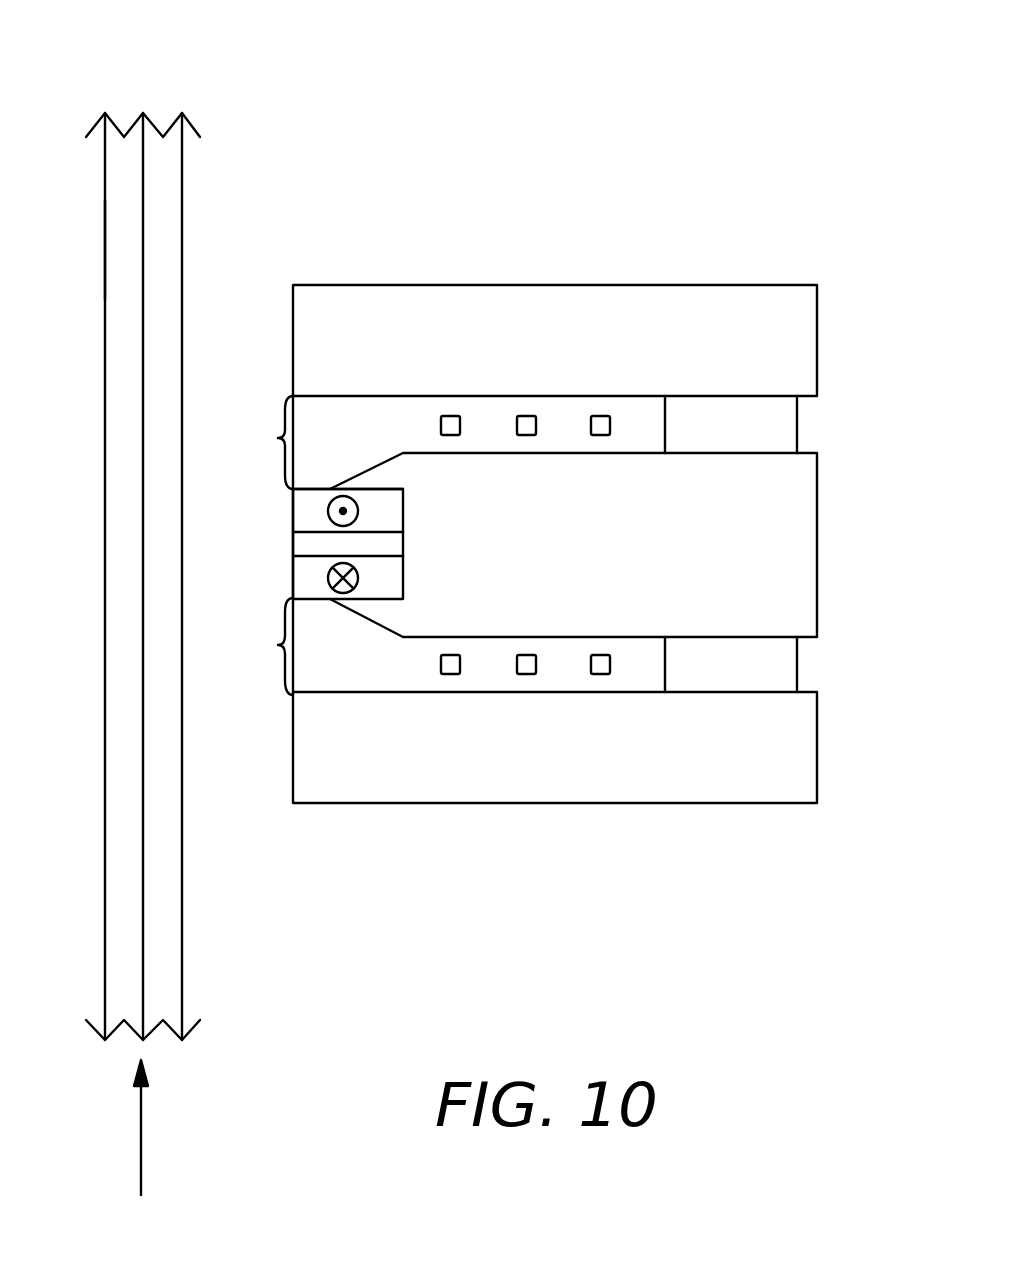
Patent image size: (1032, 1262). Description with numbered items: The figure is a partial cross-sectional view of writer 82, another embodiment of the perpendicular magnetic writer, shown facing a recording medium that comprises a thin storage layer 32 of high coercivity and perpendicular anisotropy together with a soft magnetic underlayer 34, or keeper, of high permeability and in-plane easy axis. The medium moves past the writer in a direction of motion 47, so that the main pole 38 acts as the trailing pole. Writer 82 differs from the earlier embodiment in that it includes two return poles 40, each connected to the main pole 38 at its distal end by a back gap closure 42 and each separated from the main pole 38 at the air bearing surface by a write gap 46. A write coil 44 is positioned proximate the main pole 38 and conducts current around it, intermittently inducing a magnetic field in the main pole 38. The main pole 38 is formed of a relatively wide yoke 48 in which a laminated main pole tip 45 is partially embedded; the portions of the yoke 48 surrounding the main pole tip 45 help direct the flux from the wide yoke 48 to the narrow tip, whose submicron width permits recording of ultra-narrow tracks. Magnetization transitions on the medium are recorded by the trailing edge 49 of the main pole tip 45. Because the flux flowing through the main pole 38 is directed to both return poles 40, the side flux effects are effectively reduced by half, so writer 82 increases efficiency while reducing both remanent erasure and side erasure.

The writer 82 is at (672, 138).
The thin storage layer 32 is at (175, 238).
The soft magnetic underlayer 34 is at (120, 210).
The direction of motion 47 is at (143, 1143).
The return pole 40 is at (795, 337).
The back gap closure 42 is at (777, 415).
The write coil 44 is at (600, 416).
The write gap 46 is at (262, 545).
The yoke 48 is at (787, 503).
The main pole 38 is at (785, 571).
The main pole tip 45 is at (275, 548).
The trailing edge 49 is at (290, 493).